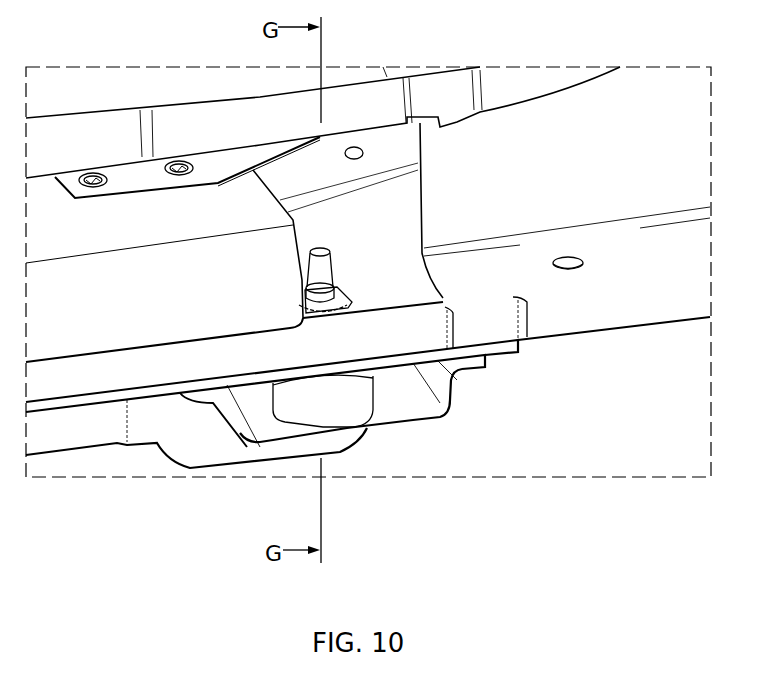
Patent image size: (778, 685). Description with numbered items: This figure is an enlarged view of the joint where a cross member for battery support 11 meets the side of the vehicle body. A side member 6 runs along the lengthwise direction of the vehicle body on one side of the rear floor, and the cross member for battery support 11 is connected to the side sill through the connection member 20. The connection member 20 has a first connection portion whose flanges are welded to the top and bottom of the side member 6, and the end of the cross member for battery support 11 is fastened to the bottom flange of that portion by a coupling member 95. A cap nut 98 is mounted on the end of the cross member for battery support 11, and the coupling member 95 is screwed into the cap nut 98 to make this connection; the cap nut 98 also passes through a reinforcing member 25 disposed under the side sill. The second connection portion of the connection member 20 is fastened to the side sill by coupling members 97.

The side member 6 is at (643, 292).
The cross member for battery support 11 is at (262, 466).
The connection member 20 is at (445, 188).
The reinforcing member 25 is at (80, 400).
The coupling member 95 is at (323, 273).
The coupling member 97 is at (182, 160).
The cap nut 98 is at (350, 440).